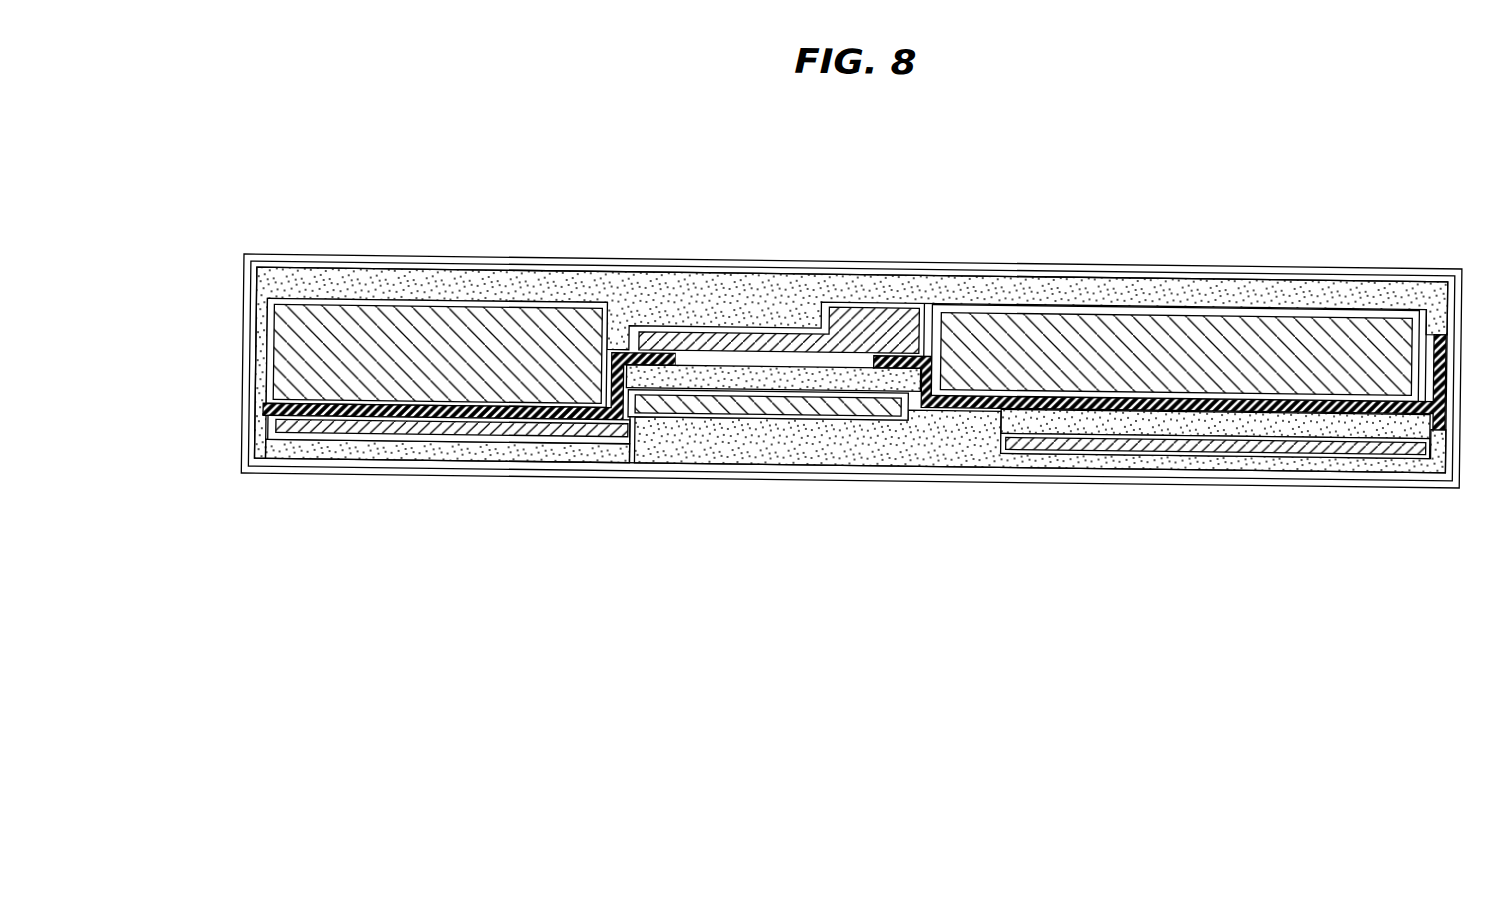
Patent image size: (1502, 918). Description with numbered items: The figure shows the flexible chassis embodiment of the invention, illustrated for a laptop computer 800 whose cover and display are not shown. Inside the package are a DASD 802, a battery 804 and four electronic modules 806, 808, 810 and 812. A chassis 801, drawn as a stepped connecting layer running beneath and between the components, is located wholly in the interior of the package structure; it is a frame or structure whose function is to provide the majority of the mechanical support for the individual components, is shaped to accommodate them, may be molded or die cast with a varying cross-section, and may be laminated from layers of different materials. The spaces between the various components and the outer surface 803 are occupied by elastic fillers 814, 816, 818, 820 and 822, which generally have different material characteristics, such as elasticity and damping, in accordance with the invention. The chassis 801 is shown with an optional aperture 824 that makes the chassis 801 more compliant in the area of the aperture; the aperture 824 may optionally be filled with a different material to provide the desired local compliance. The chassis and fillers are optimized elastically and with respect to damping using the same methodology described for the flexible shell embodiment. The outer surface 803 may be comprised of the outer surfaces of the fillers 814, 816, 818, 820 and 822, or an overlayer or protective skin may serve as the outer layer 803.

The laptop computer 800 is at (1085, 168).
The chassis 801 is at (272, 412).
The DASD 802 is at (281, 328).
The outer surface 803 is at (385, 252).
The battery 804 is at (1334, 309).
The electronic module 806 is at (876, 310).
The electronic module 808 is at (340, 431).
The electronic module 810 is at (708, 399).
The electronic module 812 is at (1347, 436).
The elastic filler 814 is at (558, 278).
The elastic filler 816 is at (952, 446).
The elastic filler 818 is at (1115, 409).
The elastic filler 820 is at (514, 449).
The elastic filler 822 is at (832, 375).
The aperture 824 is at (708, 352).